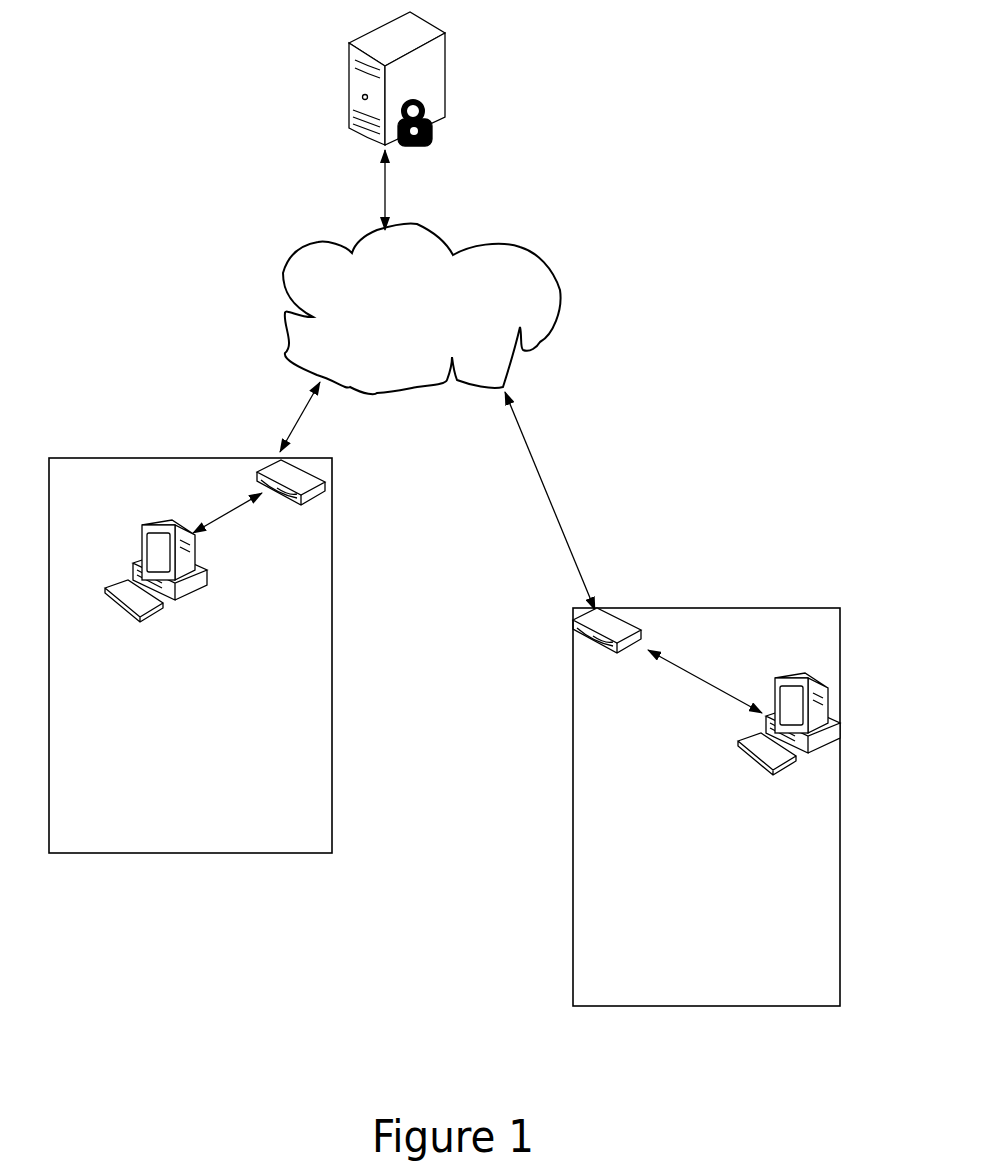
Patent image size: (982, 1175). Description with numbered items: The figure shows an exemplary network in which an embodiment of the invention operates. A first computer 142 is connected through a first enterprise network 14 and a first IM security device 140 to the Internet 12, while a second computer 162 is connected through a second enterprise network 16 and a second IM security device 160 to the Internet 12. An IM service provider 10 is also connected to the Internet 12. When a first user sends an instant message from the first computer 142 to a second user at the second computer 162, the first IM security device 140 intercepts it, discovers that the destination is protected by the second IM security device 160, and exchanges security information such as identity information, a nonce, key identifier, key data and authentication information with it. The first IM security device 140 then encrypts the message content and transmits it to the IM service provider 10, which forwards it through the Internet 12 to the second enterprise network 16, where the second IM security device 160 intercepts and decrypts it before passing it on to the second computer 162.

The IM service provider 10 is at (445, 77).
The Internet 12 is at (525, 278).
The first enterprise network 14 is at (158, 483).
The second enterprise network 16 is at (722, 643).
The first IM security device 140 is at (327, 495).
The first computer 142 is at (200, 563).
The second IM security device 160 is at (573, 632).
The second computer 162 is at (740, 747).